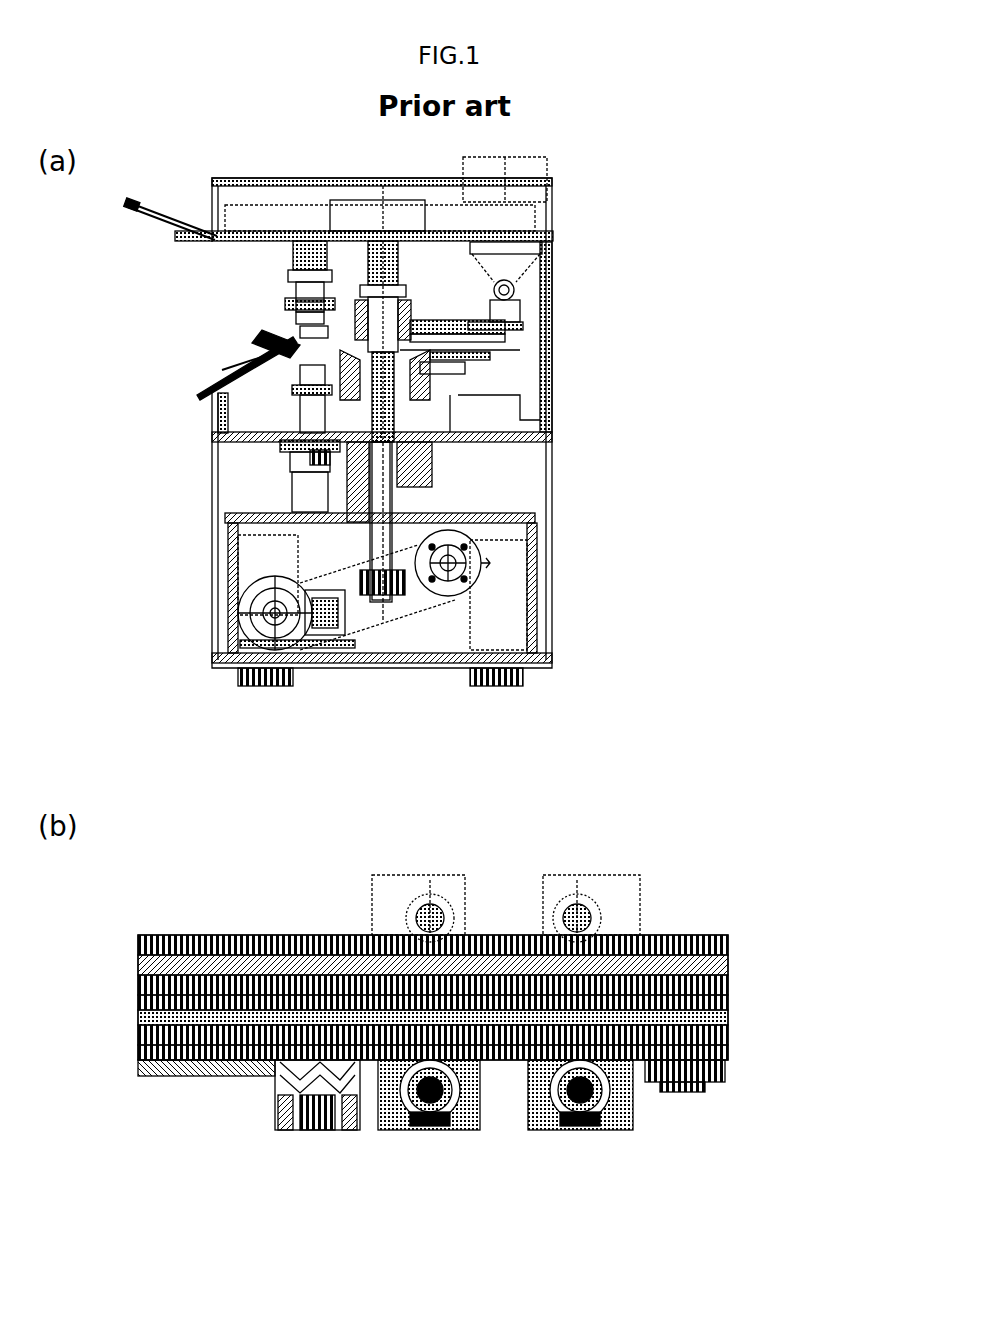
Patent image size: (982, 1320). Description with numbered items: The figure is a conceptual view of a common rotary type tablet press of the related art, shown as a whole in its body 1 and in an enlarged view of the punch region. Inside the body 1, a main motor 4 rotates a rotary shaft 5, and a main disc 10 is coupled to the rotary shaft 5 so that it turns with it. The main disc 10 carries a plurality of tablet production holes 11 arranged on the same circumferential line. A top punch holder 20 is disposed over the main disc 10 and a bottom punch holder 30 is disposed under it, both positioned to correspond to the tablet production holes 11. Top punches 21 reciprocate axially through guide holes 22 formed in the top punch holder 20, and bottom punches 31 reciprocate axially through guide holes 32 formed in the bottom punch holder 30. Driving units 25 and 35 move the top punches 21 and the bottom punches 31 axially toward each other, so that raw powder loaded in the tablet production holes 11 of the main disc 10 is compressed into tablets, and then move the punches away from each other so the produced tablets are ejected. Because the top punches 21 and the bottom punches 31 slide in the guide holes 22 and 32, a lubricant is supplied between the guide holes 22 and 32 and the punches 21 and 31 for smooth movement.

The body 1 is at (557, 466).
The main motor 4 is at (262, 610).
The rotary shaft 5 is at (385, 507).
The main disc 10 is at (180, 340).
The tablet production holes 11 is at (300, 337).
The top punch holder 20 is at (300, 306).
The top punches 21 is at (305, 325).
The guide holes 22 is at (727, 965).
The driving unit 25 is at (455, 905).
The bottom punch holder 30 is at (222, 385).
The bottom punches 31 is at (222, 370).
The guide holes 32 is at (725, 1062).
The driving unit 35 is at (478, 1112).